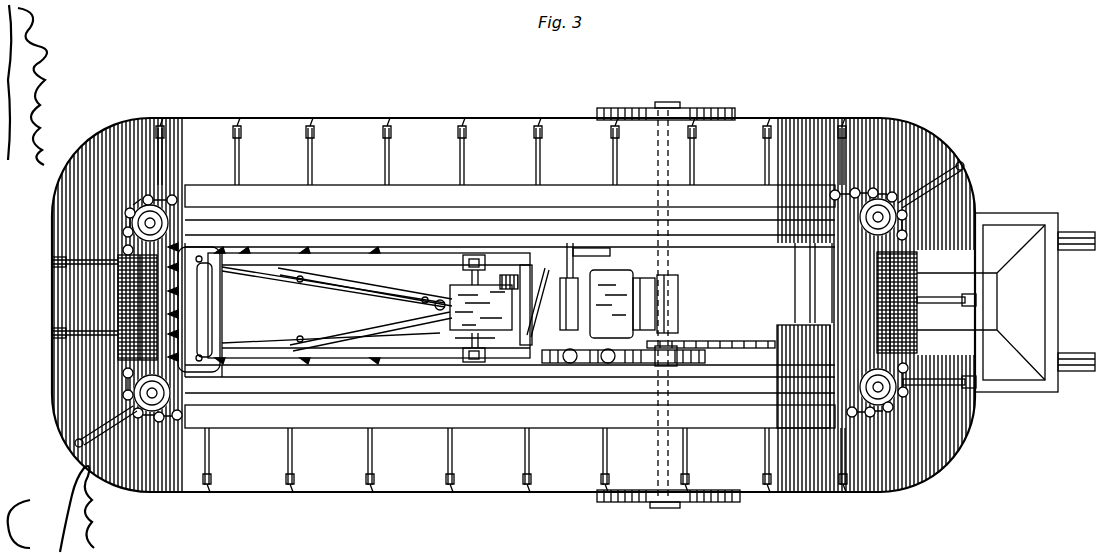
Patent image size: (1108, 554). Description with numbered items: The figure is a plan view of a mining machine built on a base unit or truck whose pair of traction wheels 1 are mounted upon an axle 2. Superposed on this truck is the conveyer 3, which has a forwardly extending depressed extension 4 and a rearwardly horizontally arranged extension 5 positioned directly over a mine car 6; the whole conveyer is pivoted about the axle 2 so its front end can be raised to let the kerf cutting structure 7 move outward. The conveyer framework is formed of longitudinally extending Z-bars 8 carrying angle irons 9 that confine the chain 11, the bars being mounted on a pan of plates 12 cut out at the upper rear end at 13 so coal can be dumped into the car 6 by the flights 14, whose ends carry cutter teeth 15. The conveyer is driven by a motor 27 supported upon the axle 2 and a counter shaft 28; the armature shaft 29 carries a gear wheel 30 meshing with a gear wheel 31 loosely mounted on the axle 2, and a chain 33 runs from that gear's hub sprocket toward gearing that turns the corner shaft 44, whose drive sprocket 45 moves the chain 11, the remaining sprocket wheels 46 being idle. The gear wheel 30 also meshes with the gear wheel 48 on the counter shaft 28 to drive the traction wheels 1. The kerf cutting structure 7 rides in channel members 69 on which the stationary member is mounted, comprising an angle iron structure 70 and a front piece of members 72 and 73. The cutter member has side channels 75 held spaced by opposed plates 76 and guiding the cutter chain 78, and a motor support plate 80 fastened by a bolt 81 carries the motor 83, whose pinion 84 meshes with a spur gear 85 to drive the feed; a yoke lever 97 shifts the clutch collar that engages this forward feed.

The traction wheels 1 is at (631, 108).
The axle 2 is at (666, 102).
The conveyer 3 is at (280, 445).
The depressed extension 4 is at (80, 373).
The rearwardly horizontally arranged extension 5 is at (945, 212).
The mine car 6 is at (1038, 362).
The kerf cutting structure 7 is at (384, 336).
The Z-bars 8 is at (571, 215).
The angle irons 9 is at (346, 200).
The chain 11 is at (150, 415).
The plates 12 is at (494, 130).
The cut out 13 is at (955, 276).
The flights 14 is at (242, 150).
The cutter teeth 15 is at (312, 125).
The motor 27 is at (613, 286).
The counter shaft 28 is at (592, 242).
The armature shaft 29 is at (610, 349).
The gear wheel 30 is at (605, 363).
The gear wheel 31 is at (655, 365).
The chain 33 is at (715, 341).
The corner shaft 44 is at (896, 412).
The drive sprocket 45 is at (853, 415).
The sprocket wheels 46 is at (130, 218).
The gear wheel 48 is at (568, 363).
The channel members 69 is at (276, 308).
The angle iron structure 70 is at (288, 375).
The front piece member 72 is at (218, 335).
The front piece member 73 is at (365, 287).
The side channels 75 is at (371, 317).
The opposed plates 76 is at (195, 292).
The cutter chain 78 is at (248, 360).
The motor support plate 80 is at (492, 262).
The bolt 81 is at (417, 307).
The motor 83 is at (428, 296).
The pinion 84 is at (481, 356).
The spur gear 85 is at (474, 331).
The yoke lever 97 is at (532, 290).